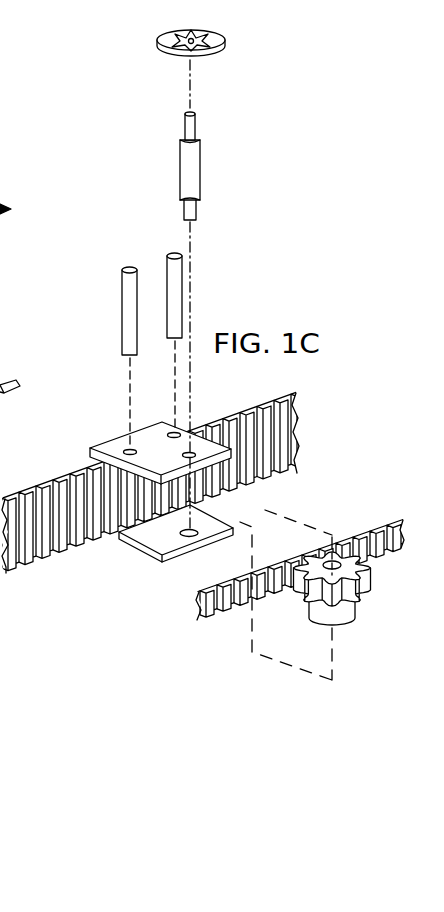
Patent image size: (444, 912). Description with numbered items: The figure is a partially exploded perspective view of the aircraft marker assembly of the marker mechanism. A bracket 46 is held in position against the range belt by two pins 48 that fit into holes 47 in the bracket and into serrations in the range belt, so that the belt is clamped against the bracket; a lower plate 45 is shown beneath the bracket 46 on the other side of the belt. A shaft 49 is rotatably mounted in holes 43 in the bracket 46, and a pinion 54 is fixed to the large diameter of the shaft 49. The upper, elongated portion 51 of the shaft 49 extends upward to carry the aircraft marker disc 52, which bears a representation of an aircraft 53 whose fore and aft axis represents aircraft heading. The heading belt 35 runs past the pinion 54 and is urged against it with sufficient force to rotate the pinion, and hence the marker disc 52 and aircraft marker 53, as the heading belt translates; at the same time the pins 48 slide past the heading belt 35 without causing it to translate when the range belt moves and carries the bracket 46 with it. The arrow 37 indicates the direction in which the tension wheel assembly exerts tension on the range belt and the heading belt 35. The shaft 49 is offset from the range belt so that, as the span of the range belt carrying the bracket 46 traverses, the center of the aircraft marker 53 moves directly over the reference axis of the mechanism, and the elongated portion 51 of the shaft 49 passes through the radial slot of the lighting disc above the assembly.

The heading belt 35 is at (198, 600).
The arrow 37 is at (8, 195).
The holes 43 is at (174, 496).
The bottom plate 45 is at (124, 530).
The bracket 46 is at (143, 446).
The holes 47 is at (168, 434).
The pins 48 is at (173, 252).
The shaft 49 is at (201, 164).
The elongated portion of shaft 51 is at (196, 121).
The aircraft marker disc 52 is at (209, 32).
The aircraft marker 53 is at (194, 31).
The pinion 54 is at (372, 581).